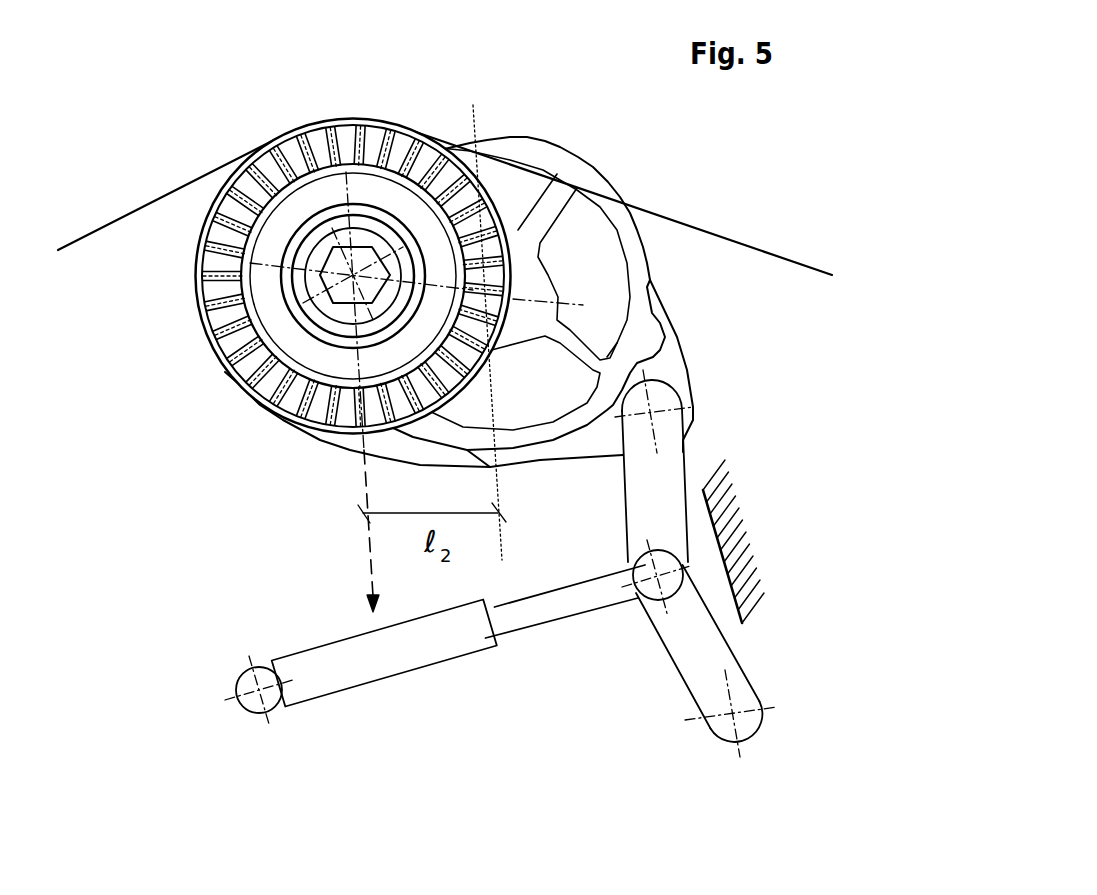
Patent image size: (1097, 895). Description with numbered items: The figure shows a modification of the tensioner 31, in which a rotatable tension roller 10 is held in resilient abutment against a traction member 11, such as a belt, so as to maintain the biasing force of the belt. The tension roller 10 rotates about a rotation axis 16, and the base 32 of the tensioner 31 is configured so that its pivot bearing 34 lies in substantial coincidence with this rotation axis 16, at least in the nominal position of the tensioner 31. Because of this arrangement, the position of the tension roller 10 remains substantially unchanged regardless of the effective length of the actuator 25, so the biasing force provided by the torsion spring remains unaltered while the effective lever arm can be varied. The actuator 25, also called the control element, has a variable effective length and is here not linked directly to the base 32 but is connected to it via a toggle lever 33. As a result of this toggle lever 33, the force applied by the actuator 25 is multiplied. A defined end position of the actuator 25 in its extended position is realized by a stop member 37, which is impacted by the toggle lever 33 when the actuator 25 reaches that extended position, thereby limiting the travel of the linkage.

The tension roller 10 is at (232, 358).
The traction member 11 is at (142, 205).
The rotation axis 16 is at (358, 278).
The actuator 25 is at (413, 657).
The tensioner 31 is at (256, 122).
The base 32 is at (607, 282).
The toggle lever 33 is at (665, 640).
The pivot bearing 34 is at (353, 276).
The stop member 37 is at (757, 590).